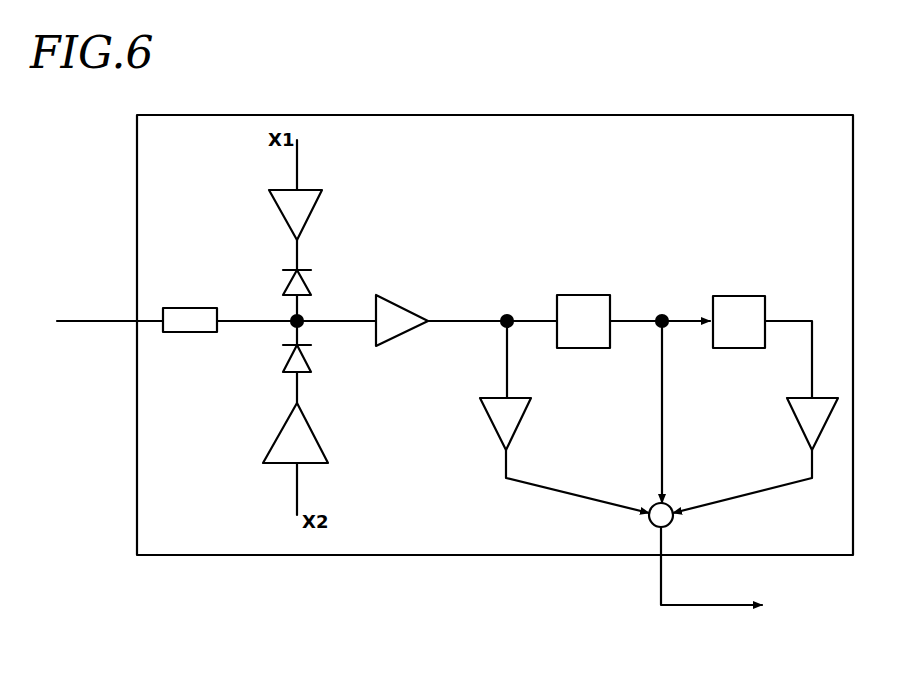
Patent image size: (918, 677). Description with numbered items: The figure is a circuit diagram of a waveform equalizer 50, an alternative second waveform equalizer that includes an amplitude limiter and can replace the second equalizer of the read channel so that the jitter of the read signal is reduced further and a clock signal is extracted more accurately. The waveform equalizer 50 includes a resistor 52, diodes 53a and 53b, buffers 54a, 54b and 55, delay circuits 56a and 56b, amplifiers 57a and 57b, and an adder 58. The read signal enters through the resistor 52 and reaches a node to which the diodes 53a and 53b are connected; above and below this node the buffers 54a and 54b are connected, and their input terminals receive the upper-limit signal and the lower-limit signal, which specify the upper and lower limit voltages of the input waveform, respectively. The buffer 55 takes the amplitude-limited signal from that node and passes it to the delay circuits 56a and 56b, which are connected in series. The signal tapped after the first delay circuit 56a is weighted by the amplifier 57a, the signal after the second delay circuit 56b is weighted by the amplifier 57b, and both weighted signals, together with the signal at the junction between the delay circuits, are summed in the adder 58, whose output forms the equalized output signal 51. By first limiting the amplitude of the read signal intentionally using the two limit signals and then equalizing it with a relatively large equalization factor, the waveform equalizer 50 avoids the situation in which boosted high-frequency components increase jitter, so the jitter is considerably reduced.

The waveform equalizer 50 is at (740, 113).
The output signal 51 is at (713, 605).
The resistor 52 is at (193, 307).
The diode 53a is at (307, 282).
The diode 53b is at (310, 360).
The buffer 54a is at (313, 213).
The buffer 54b is at (315, 433).
The buffer 55 is at (413, 308).
The delay circuit 56a is at (595, 295).
The delay circuit 56b is at (740, 296).
The amplifier 57a is at (492, 423).
The amplifier 57b is at (828, 425).
The adder 58 is at (653, 526).